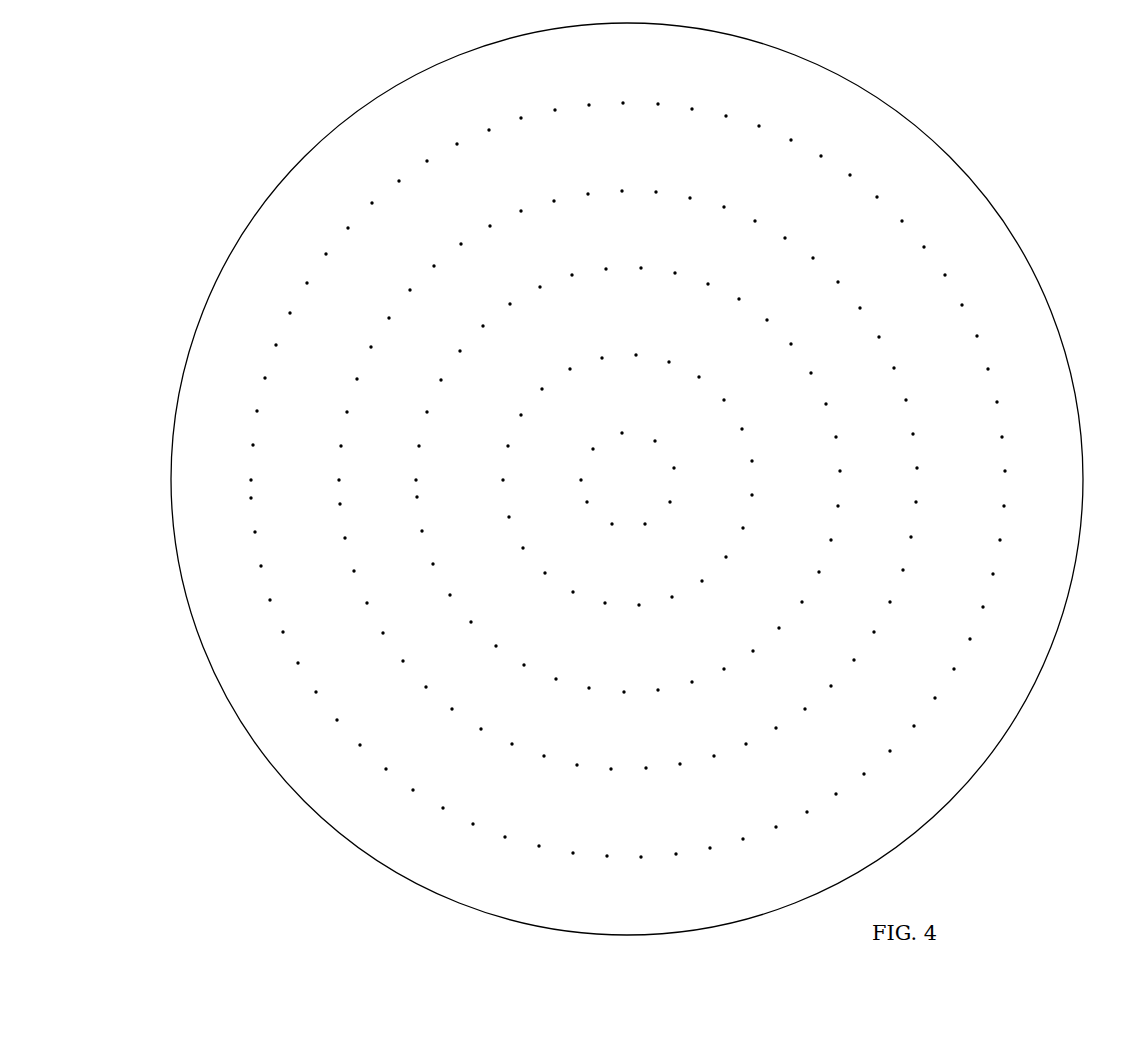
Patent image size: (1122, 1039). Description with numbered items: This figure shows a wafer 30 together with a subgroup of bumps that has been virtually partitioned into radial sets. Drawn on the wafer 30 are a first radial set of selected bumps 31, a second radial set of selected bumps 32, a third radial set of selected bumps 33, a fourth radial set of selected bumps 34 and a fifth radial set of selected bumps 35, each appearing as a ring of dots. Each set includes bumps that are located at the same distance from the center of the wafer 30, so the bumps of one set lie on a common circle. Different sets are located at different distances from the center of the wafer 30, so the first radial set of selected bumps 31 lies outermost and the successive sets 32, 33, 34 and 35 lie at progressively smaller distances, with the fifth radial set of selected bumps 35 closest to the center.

The wafer 30 is at (318, 143).
The first radial set of selected bumps 31 is at (711, 110).
The second radial set of selected bumps 32 is at (750, 215).
The third radial set of selected bumps 33 is at (718, 243).
The fourth radial set of selected bumps 34 is at (722, 393).
The fifth radial set of selected bumps 35 is at (675, 479).